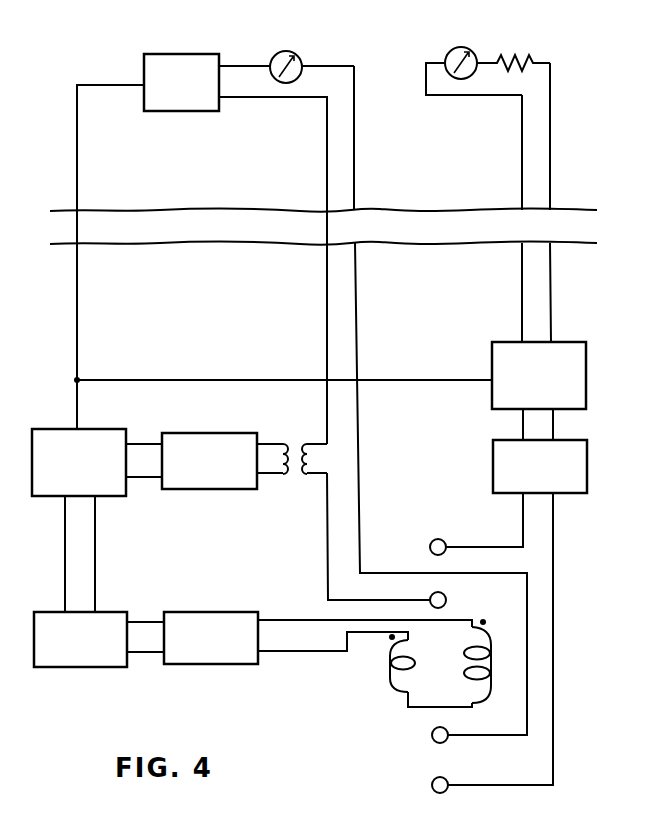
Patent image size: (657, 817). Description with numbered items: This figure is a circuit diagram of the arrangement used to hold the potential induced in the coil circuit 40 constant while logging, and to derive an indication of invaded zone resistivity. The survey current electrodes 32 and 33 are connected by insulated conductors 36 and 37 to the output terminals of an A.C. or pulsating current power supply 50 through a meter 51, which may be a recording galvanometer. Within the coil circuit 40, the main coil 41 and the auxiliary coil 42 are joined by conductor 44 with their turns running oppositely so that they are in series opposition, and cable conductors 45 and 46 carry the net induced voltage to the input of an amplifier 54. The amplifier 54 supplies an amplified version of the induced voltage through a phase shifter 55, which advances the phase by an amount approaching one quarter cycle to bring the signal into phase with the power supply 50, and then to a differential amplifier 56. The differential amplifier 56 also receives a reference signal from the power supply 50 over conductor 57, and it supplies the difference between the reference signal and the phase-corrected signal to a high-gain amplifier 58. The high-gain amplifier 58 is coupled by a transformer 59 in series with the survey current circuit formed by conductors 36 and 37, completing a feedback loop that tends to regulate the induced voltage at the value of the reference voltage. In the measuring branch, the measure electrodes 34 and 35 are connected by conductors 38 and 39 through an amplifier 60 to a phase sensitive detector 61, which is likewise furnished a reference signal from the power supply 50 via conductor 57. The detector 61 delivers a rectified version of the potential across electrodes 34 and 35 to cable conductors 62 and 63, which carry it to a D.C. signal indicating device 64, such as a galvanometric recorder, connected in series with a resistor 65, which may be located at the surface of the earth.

The electrode 32 is at (446, 597).
The electrode 33 is at (432, 739).
The electrode 34 is at (446, 543).
The electrode 35 is at (432, 790).
The insulated conductor 36 is at (327, 147).
The insulated conductor 37 is at (354, 147).
The insulated conductor 38 is at (495, 548).
The insulated conductor 39 is at (556, 600).
The coil circuit 40 is at (477, 674).
The main coil 41 is at (464, 675).
The auxiliary coil 42 is at (392, 686).
The conductor 44 is at (448, 708).
The cable conductor 45 is at (318, 620).
The cable conductor 46 is at (318, 653).
The power supply 50 is at (184, 55).
The meter 51 is at (294, 50).
The amplifier 54 is at (205, 611).
The phase shifter 55 is at (107, 611).
The differential amplifier 56 is at (57, 432).
The conductor 57 is at (77, 152).
The high-gain amplifier 58 is at (200, 433).
The transformer 59 is at (294, 438).
The amplifier 60 is at (587, 458).
The phase sensitive detector 61 is at (586, 359).
The cable conductor 62 is at (522, 145).
The cable conductor 63 is at (551, 145).
The D.C. signal indicating device 64 is at (462, 48).
The resistor 65 is at (528, 60).